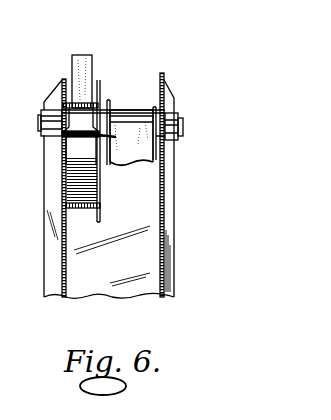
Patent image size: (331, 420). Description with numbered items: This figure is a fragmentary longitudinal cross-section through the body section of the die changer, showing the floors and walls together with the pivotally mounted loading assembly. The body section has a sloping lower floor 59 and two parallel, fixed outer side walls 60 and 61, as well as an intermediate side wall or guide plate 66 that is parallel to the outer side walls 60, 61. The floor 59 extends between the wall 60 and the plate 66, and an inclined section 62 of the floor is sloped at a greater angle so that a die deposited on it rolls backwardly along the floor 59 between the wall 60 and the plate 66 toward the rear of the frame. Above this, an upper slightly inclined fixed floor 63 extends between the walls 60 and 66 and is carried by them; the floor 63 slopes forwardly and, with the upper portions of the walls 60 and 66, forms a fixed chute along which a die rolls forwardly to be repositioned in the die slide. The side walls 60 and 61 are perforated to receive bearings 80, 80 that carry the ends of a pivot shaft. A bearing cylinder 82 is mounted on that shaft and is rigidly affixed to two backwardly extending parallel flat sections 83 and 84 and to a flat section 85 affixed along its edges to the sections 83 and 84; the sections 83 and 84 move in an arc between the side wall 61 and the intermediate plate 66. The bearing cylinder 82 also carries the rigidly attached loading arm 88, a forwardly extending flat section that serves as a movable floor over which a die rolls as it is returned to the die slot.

The sloping lower floor 59 is at (83, 213).
The fixed outer side wall 60 is at (60, 154).
The fixed outer side wall 61 is at (164, 182).
The inclined section 62 is at (80, 186).
The upper slightly inclined fixed floor 63 is at (78, 103).
The intermediate side wall or guide plate 66 is at (101, 82).
The bearing 80 is at (45, 118).
The bearing cylinder 82 is at (120, 117).
The flat section 83 is at (109, 100).
The flat section 84 is at (153, 108).
The flat section 85 is at (140, 153).
The loading arm 88 is at (87, 57).